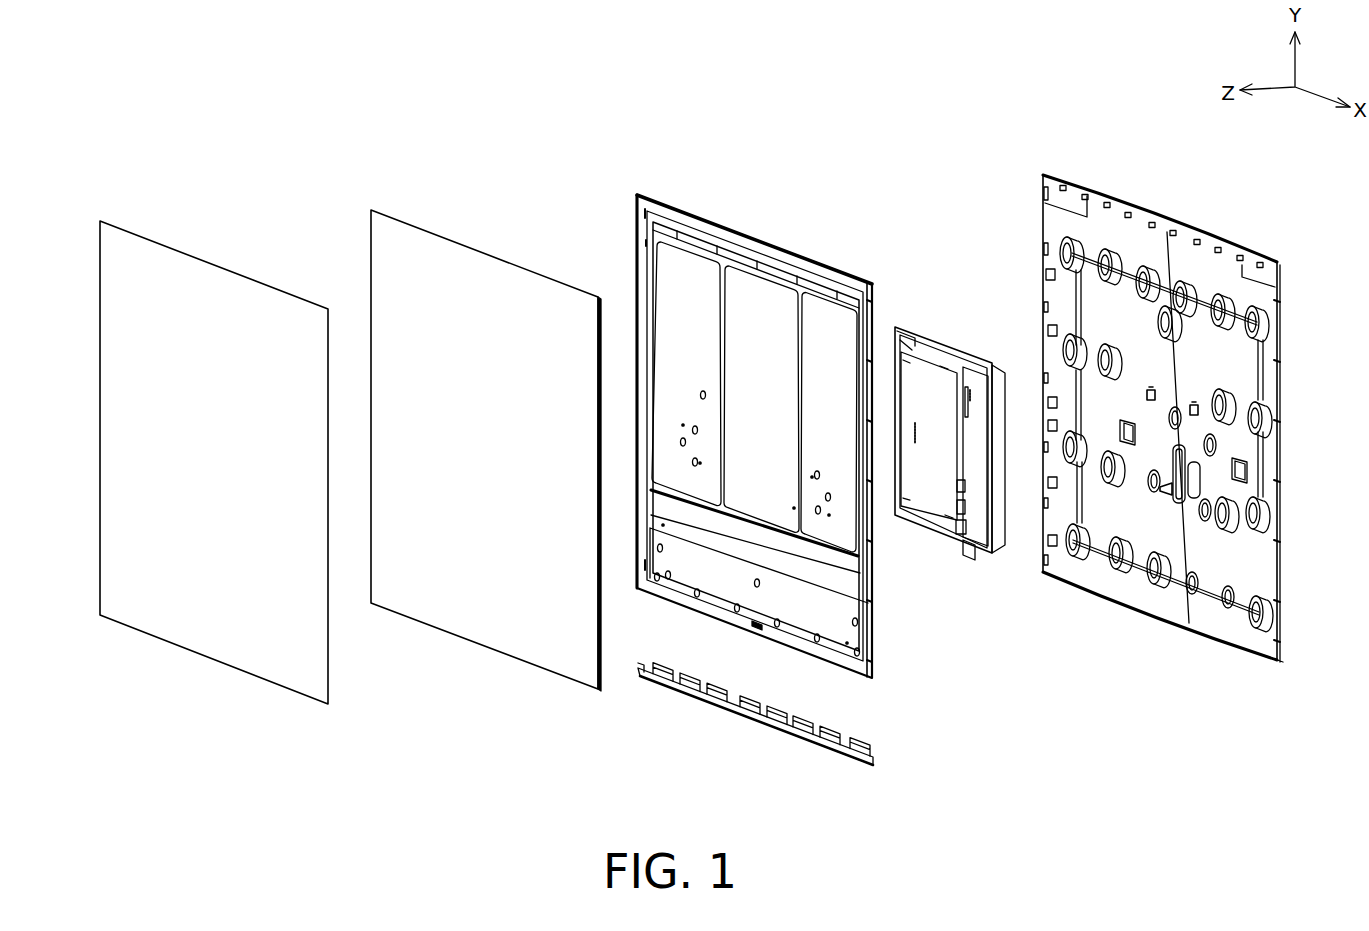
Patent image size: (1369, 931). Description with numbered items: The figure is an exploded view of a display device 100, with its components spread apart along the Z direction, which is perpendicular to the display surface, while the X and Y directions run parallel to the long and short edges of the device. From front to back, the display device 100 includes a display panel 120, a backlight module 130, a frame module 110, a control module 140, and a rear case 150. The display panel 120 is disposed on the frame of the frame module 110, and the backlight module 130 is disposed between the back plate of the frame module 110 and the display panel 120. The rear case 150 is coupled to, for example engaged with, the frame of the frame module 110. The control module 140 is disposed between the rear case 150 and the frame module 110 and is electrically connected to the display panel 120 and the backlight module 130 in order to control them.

The display device 100 is at (339, 95).
The frame module 110 is at (897, 703).
The display panel 120 is at (289, 667).
The backlight module 130 is at (576, 667).
The control module 140 is at (985, 562).
The rear case 150 is at (1247, 623).